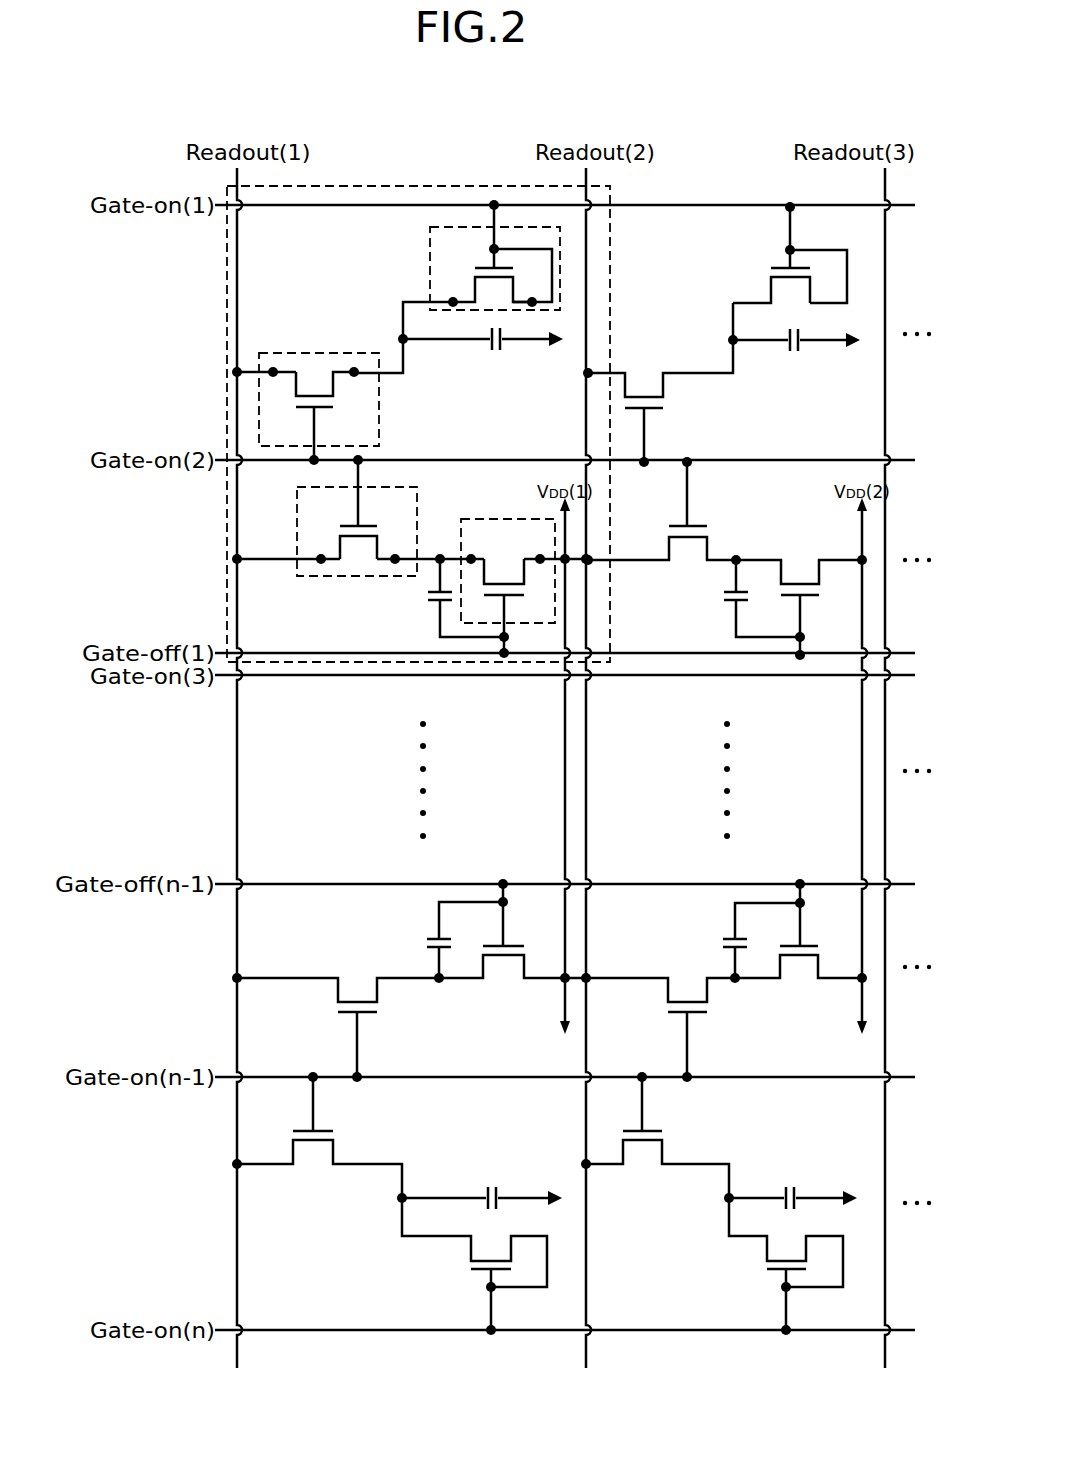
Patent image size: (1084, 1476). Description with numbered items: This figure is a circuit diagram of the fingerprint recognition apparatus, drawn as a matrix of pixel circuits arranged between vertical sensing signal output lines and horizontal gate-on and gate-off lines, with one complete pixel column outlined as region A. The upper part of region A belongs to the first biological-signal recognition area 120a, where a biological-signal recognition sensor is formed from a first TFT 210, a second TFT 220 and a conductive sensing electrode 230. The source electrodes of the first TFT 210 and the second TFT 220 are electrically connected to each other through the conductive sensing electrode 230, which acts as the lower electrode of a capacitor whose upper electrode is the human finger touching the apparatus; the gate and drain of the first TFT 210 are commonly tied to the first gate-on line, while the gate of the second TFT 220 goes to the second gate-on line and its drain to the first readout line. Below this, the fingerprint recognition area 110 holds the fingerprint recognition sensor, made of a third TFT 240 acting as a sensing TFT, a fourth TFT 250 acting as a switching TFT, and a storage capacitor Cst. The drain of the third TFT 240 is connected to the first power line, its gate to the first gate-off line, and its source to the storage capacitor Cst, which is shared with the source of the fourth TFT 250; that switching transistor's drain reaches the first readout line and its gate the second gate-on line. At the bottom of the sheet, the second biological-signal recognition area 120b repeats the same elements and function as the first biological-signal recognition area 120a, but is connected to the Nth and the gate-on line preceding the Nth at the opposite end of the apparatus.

The fingerprint recognition area 110 is at (208, 544).
The first biological-signal recognition area 120a is at (208, 316).
The second biological-signal recognition area 120b is at (208, 1206).
The first TFT 210 is at (430, 249).
The second TFT 220 is at (379, 418).
The conductive sensing electrode 230 is at (494, 352).
The third TFT 240 is at (490, 519).
The fourth TFT 250 is at (342, 577).
The pixel region A is at (410, 186).
The storage capacitor Cst is at (447, 595).